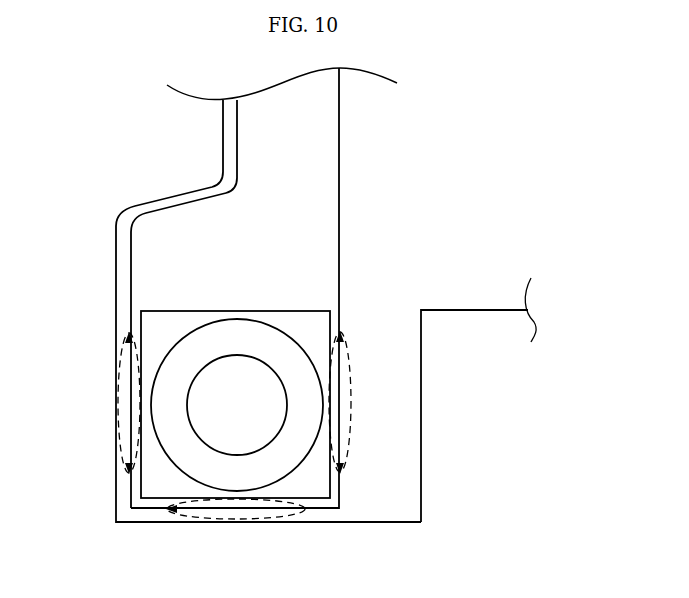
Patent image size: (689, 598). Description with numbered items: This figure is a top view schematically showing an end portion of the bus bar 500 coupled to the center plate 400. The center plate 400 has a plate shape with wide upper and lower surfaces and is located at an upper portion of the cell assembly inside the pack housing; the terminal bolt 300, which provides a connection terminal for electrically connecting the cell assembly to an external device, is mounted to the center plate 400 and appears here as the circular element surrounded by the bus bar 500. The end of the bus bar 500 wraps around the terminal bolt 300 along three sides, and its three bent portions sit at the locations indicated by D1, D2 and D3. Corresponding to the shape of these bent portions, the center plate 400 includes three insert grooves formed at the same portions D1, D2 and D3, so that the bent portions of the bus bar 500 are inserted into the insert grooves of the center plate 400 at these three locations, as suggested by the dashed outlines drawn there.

The bus bar 500 is at (339, 213).
The terminal bolt 300 is at (237, 328).
The center plate 400 is at (407, 409).
The first location D1 is at (355, 361).
The second location D2 is at (303, 522).
The third location D3 is at (114, 361).